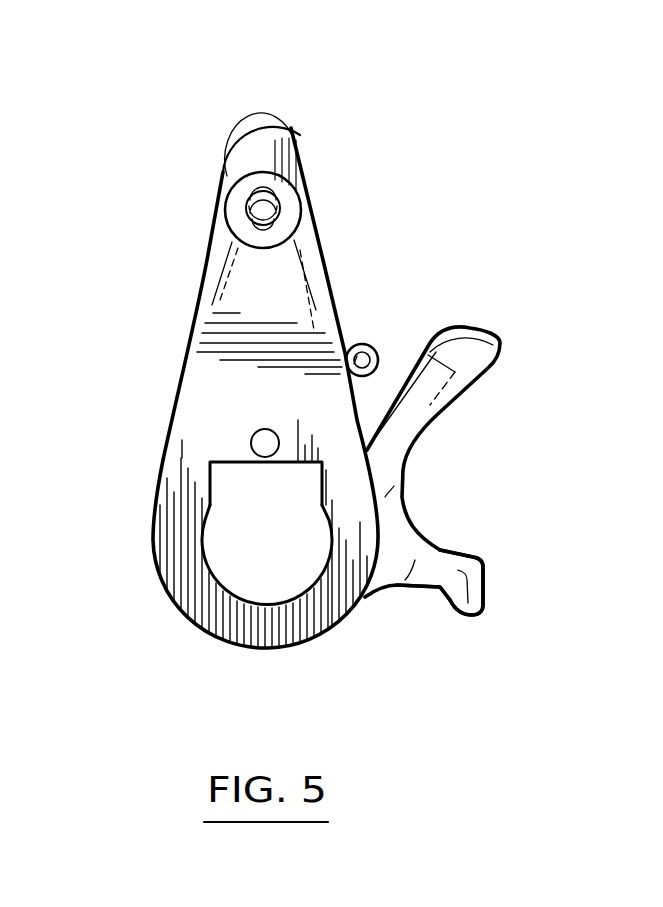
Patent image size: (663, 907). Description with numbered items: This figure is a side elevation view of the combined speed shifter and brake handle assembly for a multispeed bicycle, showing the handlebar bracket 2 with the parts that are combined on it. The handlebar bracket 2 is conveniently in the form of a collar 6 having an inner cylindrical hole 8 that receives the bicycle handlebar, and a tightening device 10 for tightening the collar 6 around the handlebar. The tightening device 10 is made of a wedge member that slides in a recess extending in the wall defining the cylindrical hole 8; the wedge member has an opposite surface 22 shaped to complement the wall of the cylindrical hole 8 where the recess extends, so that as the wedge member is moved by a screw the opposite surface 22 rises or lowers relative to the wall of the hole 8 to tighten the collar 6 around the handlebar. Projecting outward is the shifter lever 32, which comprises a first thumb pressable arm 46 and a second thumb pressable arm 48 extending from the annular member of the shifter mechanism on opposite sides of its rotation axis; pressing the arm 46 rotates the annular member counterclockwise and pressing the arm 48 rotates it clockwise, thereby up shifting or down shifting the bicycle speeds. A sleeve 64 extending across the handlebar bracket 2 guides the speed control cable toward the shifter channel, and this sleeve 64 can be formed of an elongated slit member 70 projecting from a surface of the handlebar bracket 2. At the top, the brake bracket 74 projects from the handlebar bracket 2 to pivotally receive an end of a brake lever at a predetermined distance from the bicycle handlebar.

The handlebar bracket 2 is at (307, 376).
The collar 6 is at (163, 563).
The inner cylindrical hole 8 is at (267, 555).
The tightening device 10 is at (203, 486).
The opposite surface 22 is at (232, 478).
The shifter lever 32 is at (488, 591).
The first thumb pressable arm 46 is at (469, 512).
The second thumb pressable arm 48 is at (458, 597).
The sleeve 64 is at (387, 302).
The elongated slit member 70 is at (360, 353).
The brake bracket 74 is at (227, 175).